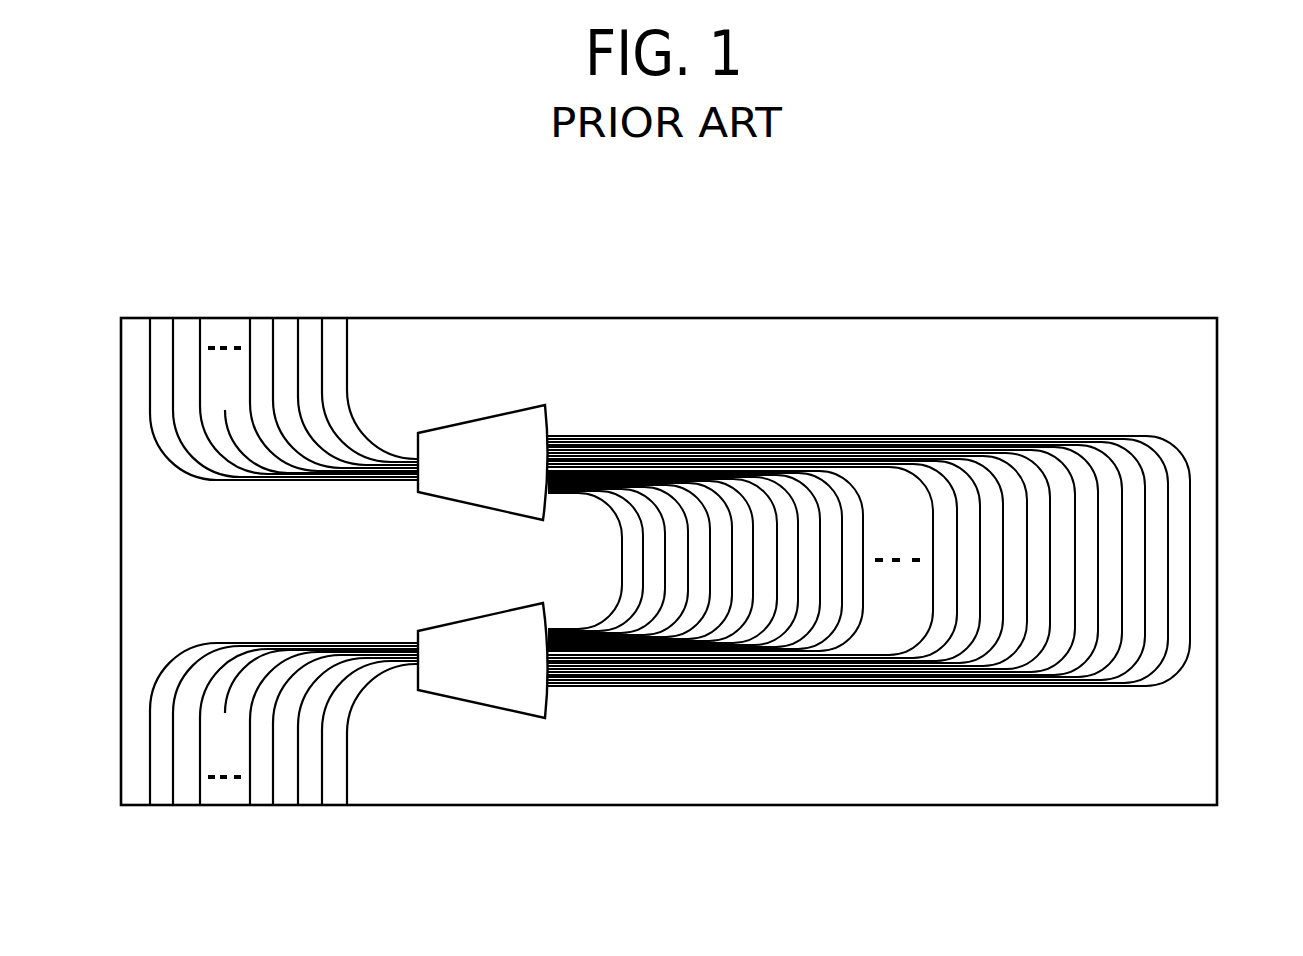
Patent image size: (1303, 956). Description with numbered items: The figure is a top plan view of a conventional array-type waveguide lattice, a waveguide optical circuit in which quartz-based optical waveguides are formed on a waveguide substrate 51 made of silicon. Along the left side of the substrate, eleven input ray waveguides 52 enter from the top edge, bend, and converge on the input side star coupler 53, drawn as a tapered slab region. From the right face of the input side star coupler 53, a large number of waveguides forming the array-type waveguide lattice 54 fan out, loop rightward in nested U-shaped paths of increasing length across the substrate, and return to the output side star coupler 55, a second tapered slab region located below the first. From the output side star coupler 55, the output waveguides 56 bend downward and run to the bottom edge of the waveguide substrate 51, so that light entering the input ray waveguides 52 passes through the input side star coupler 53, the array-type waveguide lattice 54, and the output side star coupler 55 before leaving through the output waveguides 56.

The waveguide substrate 51 is at (1195, 428).
The input ray waveguides 52 is at (150, 303).
The input side star coupler 53 is at (493, 415).
The array-type waveguide lattice 54 is at (863, 415).
The output side star coupler 55 is at (483, 707).
The output waveguides 56 is at (150, 817).